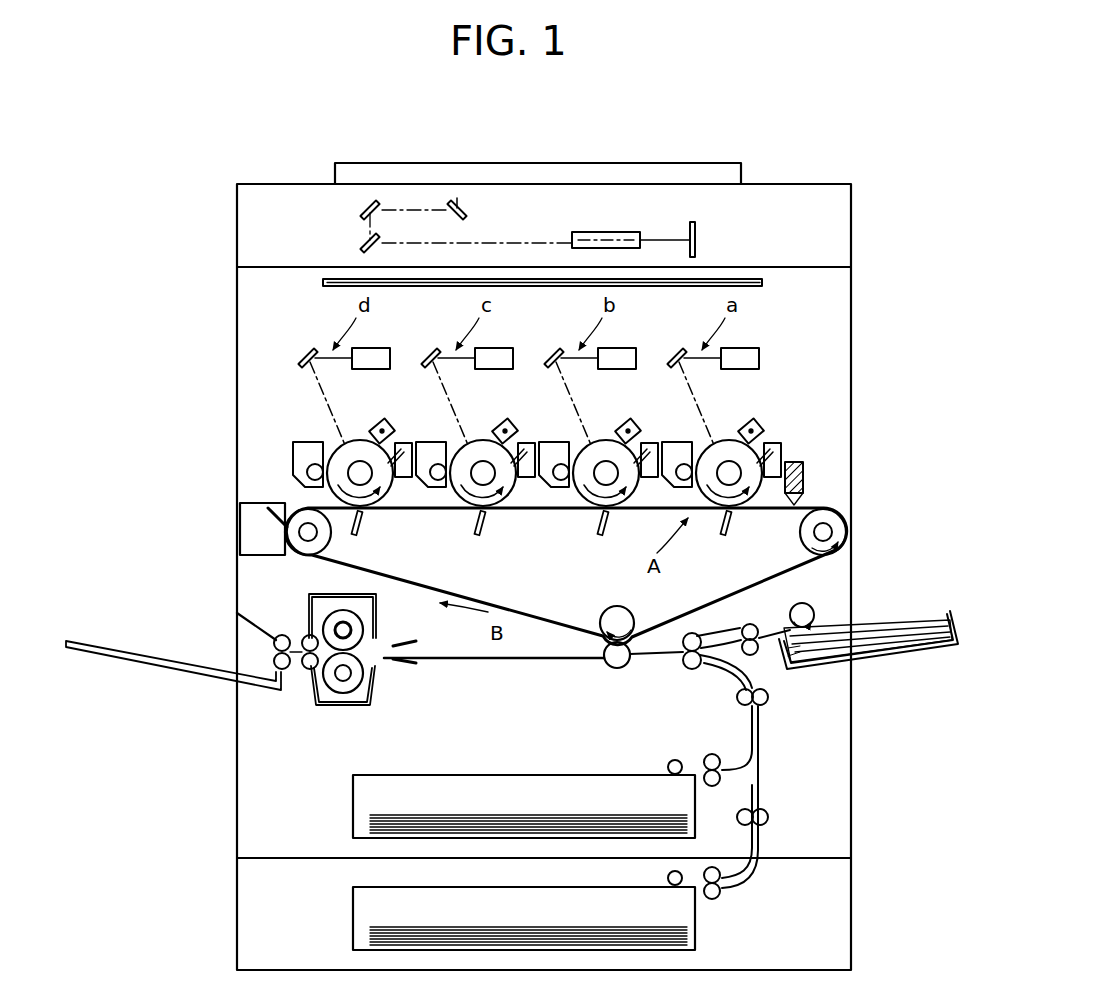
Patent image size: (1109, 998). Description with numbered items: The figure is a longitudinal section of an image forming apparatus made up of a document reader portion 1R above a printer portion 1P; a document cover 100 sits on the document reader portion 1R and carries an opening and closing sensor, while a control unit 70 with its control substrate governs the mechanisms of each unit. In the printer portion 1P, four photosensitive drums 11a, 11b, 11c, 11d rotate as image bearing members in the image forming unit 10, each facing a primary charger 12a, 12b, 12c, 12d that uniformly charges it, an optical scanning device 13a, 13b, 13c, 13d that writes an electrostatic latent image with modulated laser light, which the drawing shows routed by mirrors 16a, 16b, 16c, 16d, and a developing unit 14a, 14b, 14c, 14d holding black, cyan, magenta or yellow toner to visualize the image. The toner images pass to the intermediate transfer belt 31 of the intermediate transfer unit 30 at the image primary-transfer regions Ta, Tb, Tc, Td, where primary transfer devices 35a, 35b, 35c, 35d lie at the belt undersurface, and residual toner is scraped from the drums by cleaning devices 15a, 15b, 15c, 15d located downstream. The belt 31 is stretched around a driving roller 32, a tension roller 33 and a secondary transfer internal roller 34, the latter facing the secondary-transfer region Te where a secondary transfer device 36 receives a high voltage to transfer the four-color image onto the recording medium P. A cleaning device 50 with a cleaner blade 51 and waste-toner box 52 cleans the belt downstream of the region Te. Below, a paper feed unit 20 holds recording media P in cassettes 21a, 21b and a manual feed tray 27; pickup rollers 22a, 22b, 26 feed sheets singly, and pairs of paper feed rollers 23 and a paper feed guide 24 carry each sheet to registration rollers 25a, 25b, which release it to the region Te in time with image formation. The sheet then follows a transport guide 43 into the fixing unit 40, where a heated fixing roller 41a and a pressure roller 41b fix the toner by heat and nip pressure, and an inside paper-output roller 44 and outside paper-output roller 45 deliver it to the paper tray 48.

The document cover 100 is at (680, 163).
The document reader portion 1R is at (851, 220).
The printer portion 1P is at (851, 282).
The control unit 70 is at (323, 283).
The image forming unit 10 is at (788, 370).
The mirror 16a is at (677, 350).
The mirror 16b is at (554, 350).
The mirror 16c is at (431, 350).
The mirror 16d is at (308, 350).
The optical scanning device 13a is at (752, 348).
The optical scanning device 13b is at (629, 348).
The optical scanning device 13c is at (506, 348).
The optical scanning device 13d is at (383, 348).
The photosensitive drum 11a is at (719, 441).
The photosensitive drum 11b is at (596, 441).
The photosensitive drum 11c is at (473, 441).
The photosensitive drum 11d is at (350, 441).
The primary charger 12a is at (752, 424).
The primary charger 12b is at (629, 424).
The primary charger 12c is at (506, 424).
The primary charger 12d is at (383, 424).
The developing unit 14a is at (674, 443).
The developing unit 14b is at (551, 443).
The developing unit 14c is at (428, 443).
The developing unit 14d is at (305, 443).
The cleaning device 15a is at (771, 447).
The cleaning device 15b is at (651, 478).
The cleaning device 15c is at (528, 478).
The cleaning device 15d is at (405, 478).
The primary transfer device 35a is at (729, 535).
The primary transfer device 35b is at (606, 535).
The primary transfer device 35c is at (483, 535).
The primary transfer device 35d is at (360, 535).
The image primary-transfer region Ta is at (737, 525).
The image primary-transfer region Tb is at (614, 525).
The image primary-transfer region Tc is at (491, 525).
The image primary-transfer region Td is at (368, 525).
The secondary-transfer region Te is at (605, 650).
The intermediate transfer unit 30 is at (517, 607).
The intermediate transfer belt 31 is at (684, 616).
The driving roller 32 is at (806, 546).
The tension roller 33 is at (304, 556).
The secondary transfer internal roller 34 is at (624, 607).
The secondary transfer device 36 is at (618, 668).
The cleaning device 50 is at (223, 528).
The cleaner blade 51 is at (272, 508).
The waste-toner box 52 is at (256, 556).
The fixing unit 40 is at (368, 683).
The fixing roller 41a is at (365, 630).
The pressure roller 41b is at (365, 673).
The transport guide 43 is at (505, 662).
The inside paper-output roller 44 is at (306, 670).
The outside paper-output roller 45 is at (282, 635).
The paper tray 48 is at (185, 668).
The paper feed unit 20 is at (655, 759).
The cassette 21a is at (476, 777).
The cassette 21b is at (453, 890).
The pickup roller 22a is at (668, 767).
The pickup roller 22b is at (668, 878).
The paper feed rollers 23 is at (748, 626).
The paper feed guide 24 is at (765, 690).
The registration roller 25a is at (694, 633).
The registration roller 25b is at (690, 670).
The pickup roller 26 is at (810, 606).
The manual feed tray 27 is at (898, 668).
The recording medium P is at (903, 625).